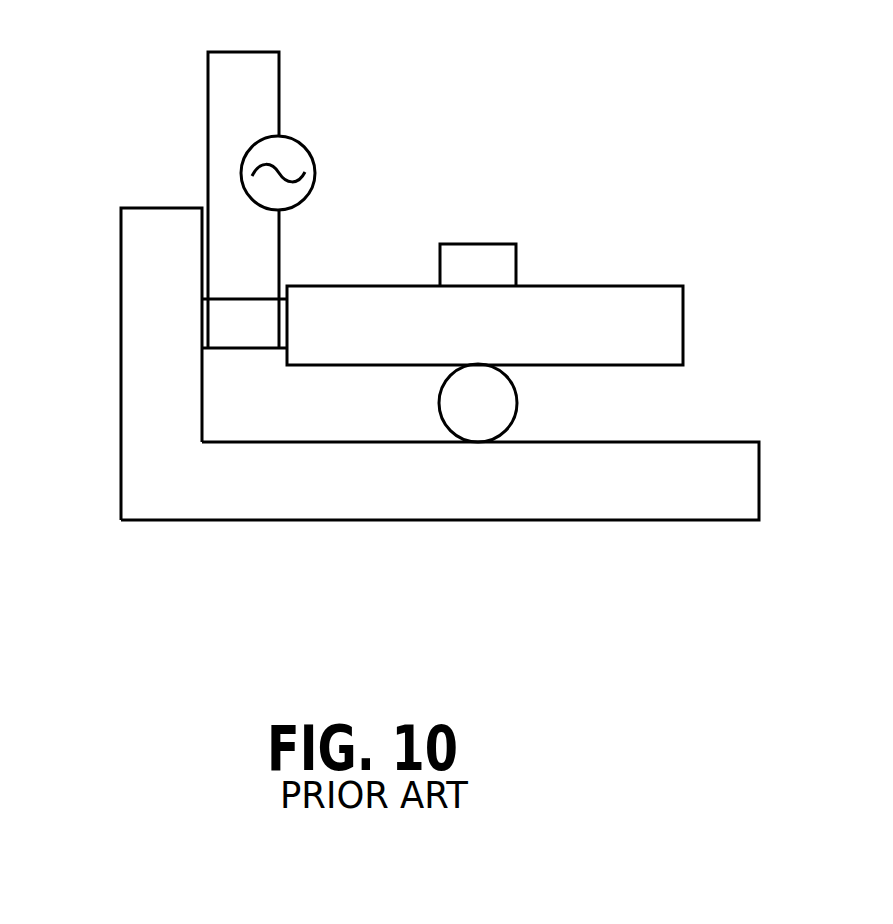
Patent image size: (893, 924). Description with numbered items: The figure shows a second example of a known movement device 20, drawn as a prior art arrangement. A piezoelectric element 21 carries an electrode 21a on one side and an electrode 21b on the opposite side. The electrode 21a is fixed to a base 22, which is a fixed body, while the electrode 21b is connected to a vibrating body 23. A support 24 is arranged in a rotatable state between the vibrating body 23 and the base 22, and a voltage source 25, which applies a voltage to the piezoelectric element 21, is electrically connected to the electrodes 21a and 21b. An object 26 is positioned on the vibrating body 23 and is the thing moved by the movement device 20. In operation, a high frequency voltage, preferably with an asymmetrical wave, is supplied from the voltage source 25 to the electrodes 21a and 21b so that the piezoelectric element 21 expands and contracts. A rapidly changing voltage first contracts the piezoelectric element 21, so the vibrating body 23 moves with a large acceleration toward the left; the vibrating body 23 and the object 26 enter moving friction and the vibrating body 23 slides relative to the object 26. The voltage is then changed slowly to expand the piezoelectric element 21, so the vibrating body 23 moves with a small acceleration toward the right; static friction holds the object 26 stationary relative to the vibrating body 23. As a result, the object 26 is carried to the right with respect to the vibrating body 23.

The movement device 20 is at (583, 530).
The piezoelectric element 21 is at (240, 283).
The electrode 21a is at (202, 308).
The electrode 21b is at (287, 323).
The base 22 is at (143, 384).
The vibrating body 23 is at (672, 328).
The support 24 is at (508, 403).
The voltage source 25 is at (313, 157).
The object 26 is at (467, 250).